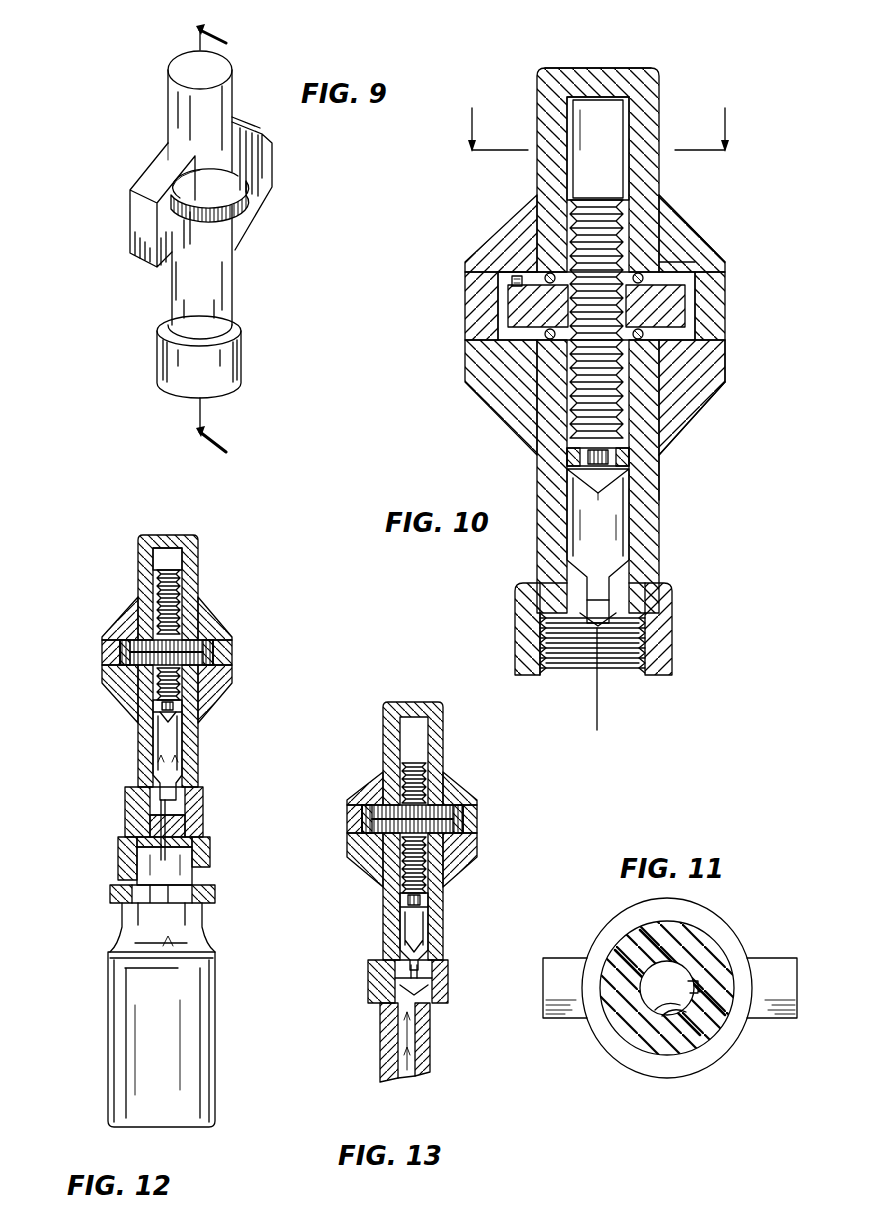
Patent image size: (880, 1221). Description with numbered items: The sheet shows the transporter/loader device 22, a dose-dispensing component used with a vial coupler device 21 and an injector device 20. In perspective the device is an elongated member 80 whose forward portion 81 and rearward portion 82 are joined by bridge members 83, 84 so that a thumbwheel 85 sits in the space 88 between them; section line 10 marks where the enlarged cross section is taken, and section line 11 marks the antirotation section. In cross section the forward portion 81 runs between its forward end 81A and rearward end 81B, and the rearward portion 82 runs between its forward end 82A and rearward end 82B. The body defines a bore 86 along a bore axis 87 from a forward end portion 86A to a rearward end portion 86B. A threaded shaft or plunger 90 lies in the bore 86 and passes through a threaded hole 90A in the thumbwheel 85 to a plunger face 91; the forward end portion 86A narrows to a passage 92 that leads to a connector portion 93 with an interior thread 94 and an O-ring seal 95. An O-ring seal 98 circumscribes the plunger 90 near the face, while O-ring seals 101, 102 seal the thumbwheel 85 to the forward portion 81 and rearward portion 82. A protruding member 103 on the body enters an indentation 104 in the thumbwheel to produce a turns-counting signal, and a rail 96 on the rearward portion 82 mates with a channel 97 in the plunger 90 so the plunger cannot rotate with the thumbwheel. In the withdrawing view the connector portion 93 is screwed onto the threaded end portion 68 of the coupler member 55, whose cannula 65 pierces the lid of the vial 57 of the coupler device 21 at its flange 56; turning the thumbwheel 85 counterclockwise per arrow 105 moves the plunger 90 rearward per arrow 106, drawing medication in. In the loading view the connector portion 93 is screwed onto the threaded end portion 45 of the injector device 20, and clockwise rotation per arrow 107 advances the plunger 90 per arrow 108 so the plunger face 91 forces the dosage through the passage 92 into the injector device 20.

In FIG. 9, the section line 10— 10 is at (194, 232).
In FIG. 10, the section line 11 is at (601, 150).
In FIG. 13, the injector device 20 is at (380, 1058).
In FIG. 12, the vial coupler device 21 is at (110, 901).
In FIG. 9, the transporter/loader device 22 is at (148, 141).
In FIG. 12, the transporter/loader device 22 is at (136, 548).
In FIG. 13, the transporter/loader device 22 is at (384, 705).
In FIG. 13, the threaded end portion 45 is at (429, 991).
In FIG. 12, the coupler member 55 is at (210, 852).
In FIG. 12, the flange 56 is at (216, 897).
In FIG. 12, the vial 57 is at (109, 1059).
In FIG. 12, the cannula 65 is at (118, 850).
In FIG. 12, the threaded end portion 68 is at (182, 826).
In FIG. 9, the elongated member 80 is at (237, 287).
In FIG. 10, the elongated member 80 is at (661, 478).
In FIG. 9, the forward portion 81 is at (243, 357).
In FIG. 10, the forward portion 81 is at (536, 567).
In FIG. 10, the forward end 81A is at (668, 672).
In FIG. 10, the rearward end 81B is at (700, 380).
In FIG. 9, the rearward portion 82 is at (233, 85).
In FIG. 10, the rearward portion 82 is at (652, 122).
In FIG. 11, the rearward portion 82 is at (631, 922).
In FIG. 10, the forward end 82A is at (672, 265).
In FIG. 10, the rearward end 82B is at (575, 68).
In FIG. 9, the bridge member 83 is at (132, 226).
In FIG. 10, the bridge member 83 is at (470, 316).
In FIG. 11, the bridge member 83 is at (575, 942).
In FIG. 9, the bridge member 84 is at (272, 158).
In FIG. 10, the bridge member 84 is at (690, 437).
In FIG. 11, the bridge member 84 is at (768, 958).
In FIG. 9, the thumbwheel 85 is at (252, 183).
In FIG. 10, the thumbwheel 85 is at (700, 275).
In FIG. 12, the thumbwheel 85 is at (215, 652).
In FIG. 13, the thumbwheel 85 is at (362, 818).
In FIG. 11, the thumbwheel 85 is at (718, 914).
In FIG. 10, the bore 86 is at (580, 490).
In FIG. 12, the bore 86 is at (162, 745).
In FIG. 13, the bore 86 is at (414, 923).
In FIG. 10, the forward end portion of the bore 86A is at (612, 553).
In FIG. 10, the rearward end portion of the bore 86B is at (566, 100).
In FIG. 12, the rearward end portion of the bore 86B is at (178, 552).
In FIG. 10, the bore axis 87 is at (600, 705).
In FIG. 10, the space 88 is at (505, 338).
In FIG. 10, the threaded shaft or plunger 90 is at (585, 200).
In FIG. 12, the threaded shaft or plunger 90 is at (181, 690).
In FIG. 13, the threaded shaft or plunger 90 is at (421, 773).
In FIG. 11, the threaded shaft or plunger 90 is at (651, 1002).
In FIG. 10, the threaded hole 90A is at (641, 313).
In FIG. 10, the plunger face 91 is at (613, 488).
In FIG. 12, the plunger face 91 is at (184, 719).
In FIG. 13, the plunger face 91 is at (400, 915).
In FIG. 10, the passage 92 is at (597, 598).
In FIG. 12, the passage 92 is at (163, 793).
In FIG. 13, the passage 92 is at (409, 962).
In FIG. 10, the threaded end portion or connector portion 93 is at (646, 638).
In FIG. 12, the threaded end portion or connector portion 93 is at (128, 813).
In FIG. 13, the threaded end portion or connector portion 93 is at (398, 980).
In FIG. 10, the interior thread 94 is at (646, 661).
In FIG. 10, the O-ring seal 95 is at (545, 648).
In FIG. 10, the rail 96 is at (626, 106).
In FIG. 11, the rail 96 is at (705, 1010).
In FIG. 11, the channel 97 is at (646, 1030).
In FIG. 10, the O-ring seal 98 is at (560, 458).
In FIG. 10, the O-ring seal 101 is at (697, 445).
In FIG. 10, the O-ring seal 102 is at (648, 262).
In FIG. 10, the protruding member 103 is at (512, 272).
In FIG. 10, the indentation 104 is at (516, 283).
In FIG. 12, the arrow 105 is at (121, 657).
In FIG. 12, the arrow 106 is at (160, 612).
In FIG. 13, the arrow 107 is at (455, 822).
In FIG. 13, the arrow 108 is at (421, 862).